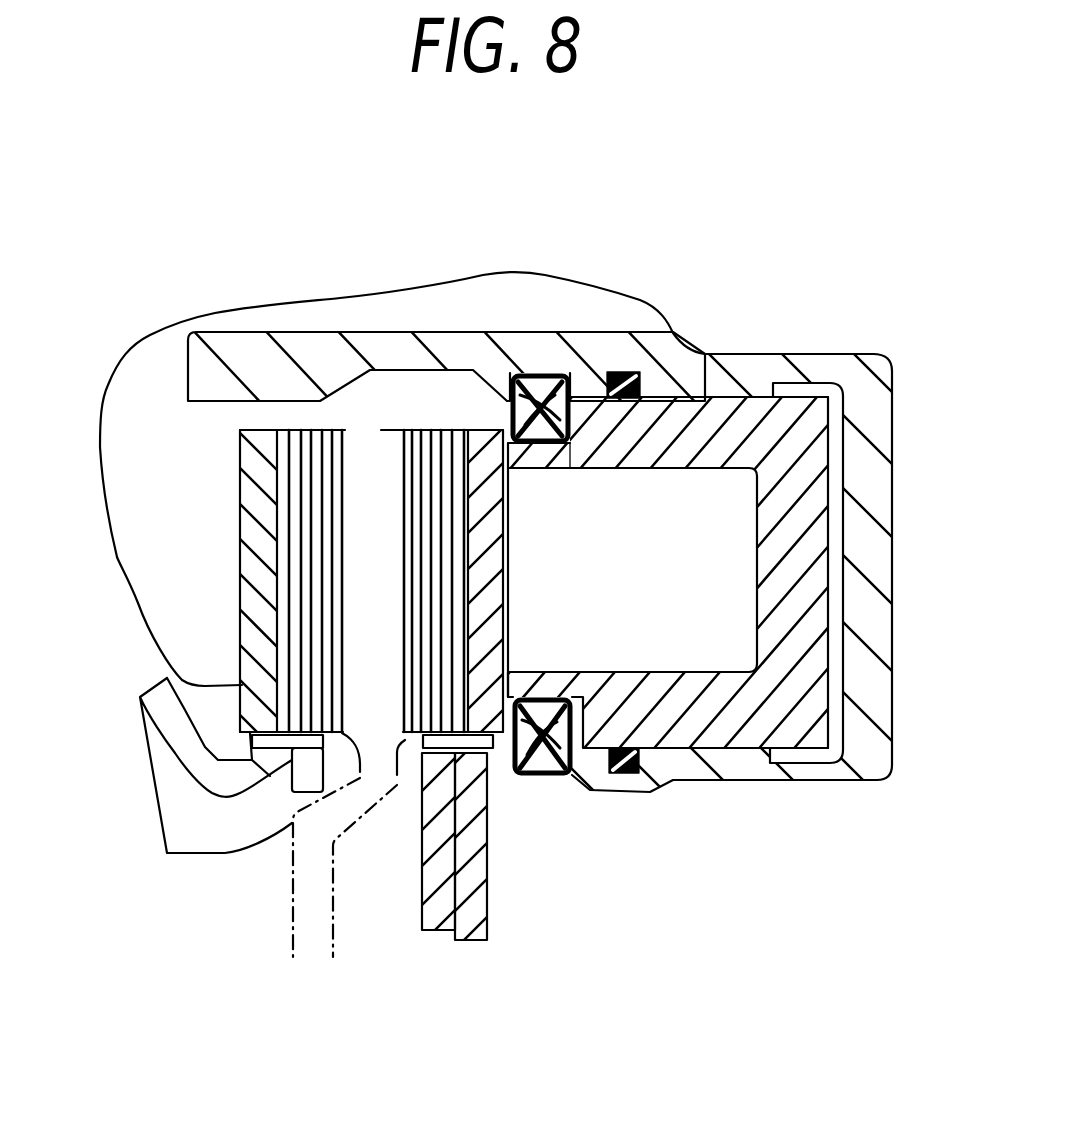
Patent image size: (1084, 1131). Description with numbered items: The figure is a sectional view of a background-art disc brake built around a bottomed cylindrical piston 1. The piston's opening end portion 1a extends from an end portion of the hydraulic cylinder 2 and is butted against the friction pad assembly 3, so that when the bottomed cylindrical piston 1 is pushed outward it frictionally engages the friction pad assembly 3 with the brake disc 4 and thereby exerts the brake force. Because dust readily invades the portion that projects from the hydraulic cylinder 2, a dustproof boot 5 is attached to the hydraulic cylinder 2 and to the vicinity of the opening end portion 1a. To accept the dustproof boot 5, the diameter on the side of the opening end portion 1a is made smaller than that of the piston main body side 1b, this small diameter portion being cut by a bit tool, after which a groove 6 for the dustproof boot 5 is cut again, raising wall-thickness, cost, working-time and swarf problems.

The bottomed cylindrical piston 1 is at (846, 521).
The opening end portion 1a is at (513, 682).
The piston main body side 1b is at (717, 420).
The hydraulic cylinder 2 is at (823, 643).
The friction pad assembly 3 is at (303, 607).
The brake disc 4 is at (373, 462).
The dustproof boot 5 is at (533, 390).
The groove 6 is at (557, 470).